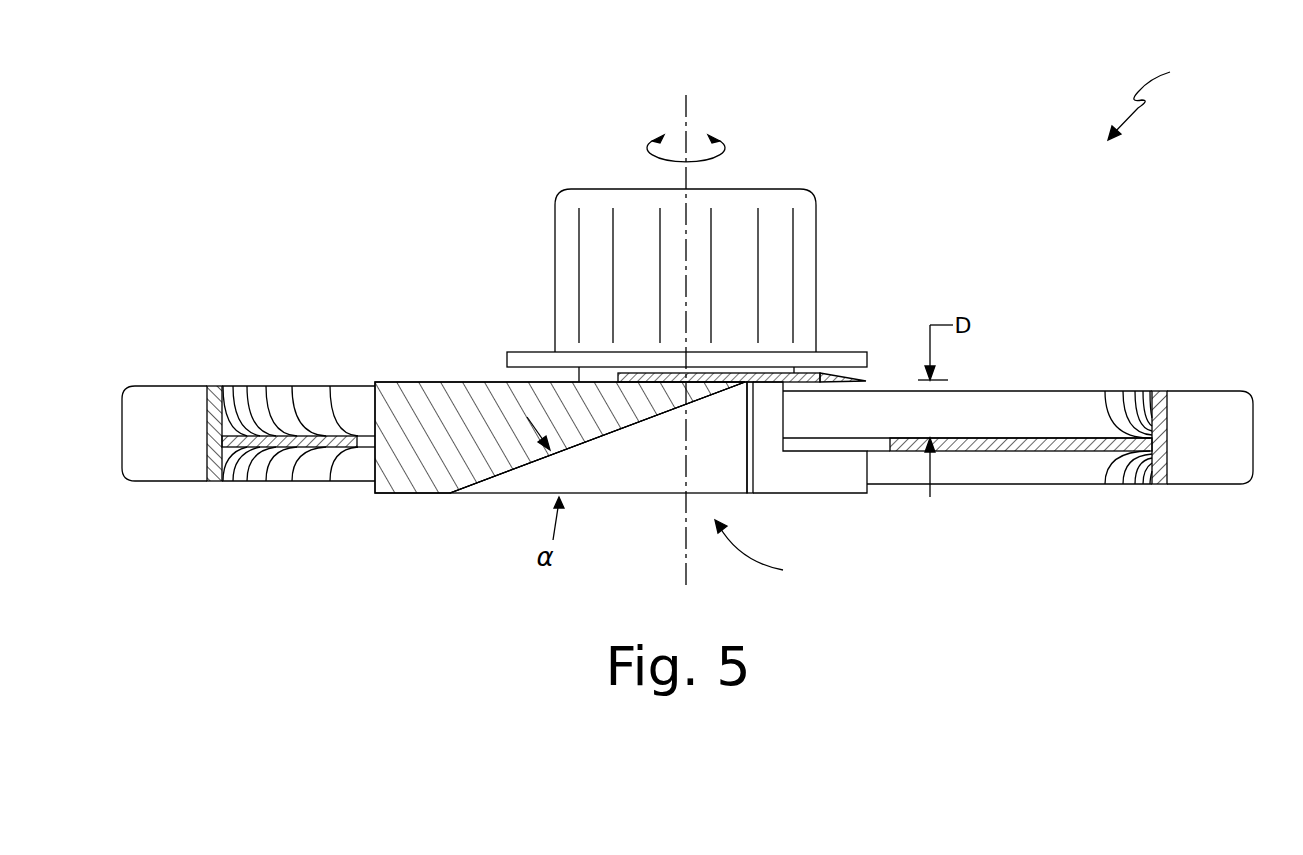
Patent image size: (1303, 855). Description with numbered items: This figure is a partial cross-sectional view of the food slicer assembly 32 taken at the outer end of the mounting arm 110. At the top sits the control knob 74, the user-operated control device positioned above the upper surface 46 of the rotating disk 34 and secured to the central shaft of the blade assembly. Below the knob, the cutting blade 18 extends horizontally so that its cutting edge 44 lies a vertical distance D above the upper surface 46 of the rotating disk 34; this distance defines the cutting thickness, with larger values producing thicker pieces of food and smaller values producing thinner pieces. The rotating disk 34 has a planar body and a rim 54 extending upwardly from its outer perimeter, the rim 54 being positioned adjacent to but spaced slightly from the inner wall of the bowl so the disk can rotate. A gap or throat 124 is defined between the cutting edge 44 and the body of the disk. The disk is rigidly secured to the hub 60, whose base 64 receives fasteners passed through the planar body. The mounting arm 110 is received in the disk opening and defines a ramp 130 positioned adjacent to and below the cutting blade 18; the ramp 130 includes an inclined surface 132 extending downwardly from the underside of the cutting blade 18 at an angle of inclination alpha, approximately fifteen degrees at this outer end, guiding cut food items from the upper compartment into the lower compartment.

The food slicer assembly 32 is at (1152, 98).
The control knob 74 is at (806, 208).
The cutting blade 18 is at (823, 376).
The cutting edge 44 is at (872, 380).
The upper surface 46 is at (980, 438).
The rotating disk 34 is at (1157, 392).
The rim 54 is at (1167, 439).
The gap or throat 124 is at (887, 438).
The inclined surface 132 is at (660, 427).
The mounting arm 110 is at (413, 485).
The hub 60 is at (783, 480).
The base 64 is at (838, 480).
The ramp 130 is at (767, 552).